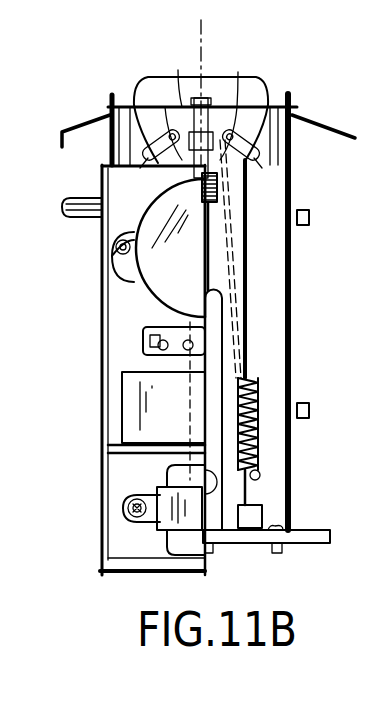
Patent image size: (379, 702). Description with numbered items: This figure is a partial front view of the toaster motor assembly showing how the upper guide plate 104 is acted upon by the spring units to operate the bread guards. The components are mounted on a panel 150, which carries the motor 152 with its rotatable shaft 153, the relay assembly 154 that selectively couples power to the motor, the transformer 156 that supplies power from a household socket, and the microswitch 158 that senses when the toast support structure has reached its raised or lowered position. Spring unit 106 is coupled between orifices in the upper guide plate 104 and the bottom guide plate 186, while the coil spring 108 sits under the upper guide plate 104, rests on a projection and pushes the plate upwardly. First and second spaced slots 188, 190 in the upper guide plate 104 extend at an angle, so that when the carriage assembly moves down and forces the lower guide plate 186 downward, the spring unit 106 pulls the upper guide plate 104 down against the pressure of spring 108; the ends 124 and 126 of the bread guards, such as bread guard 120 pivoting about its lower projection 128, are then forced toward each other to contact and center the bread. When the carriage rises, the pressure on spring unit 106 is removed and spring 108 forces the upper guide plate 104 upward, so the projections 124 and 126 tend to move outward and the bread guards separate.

The upper guide plate 104 is at (150, 147).
The spring unit 106 is at (255, 400).
The coil spring 108 is at (212, 192).
The bread guard 120 is at (235, 280).
The projection 124 is at (245, 77).
The projection 126 is at (176, 75).
The lower projection 128 is at (260, 472).
The panel 150 is at (102, 393).
The motor 152 is at (155, 278).
The rotatable shaft 153 is at (75, 218).
The relay assembly 154 is at (143, 455).
The transformer 156 is at (163, 528).
The microswitch 158 is at (148, 327).
The bottom guide plate 186 is at (262, 512).
The first spaced slot 188 is at (263, 107).
The second spaced slot 190 is at (156, 168).